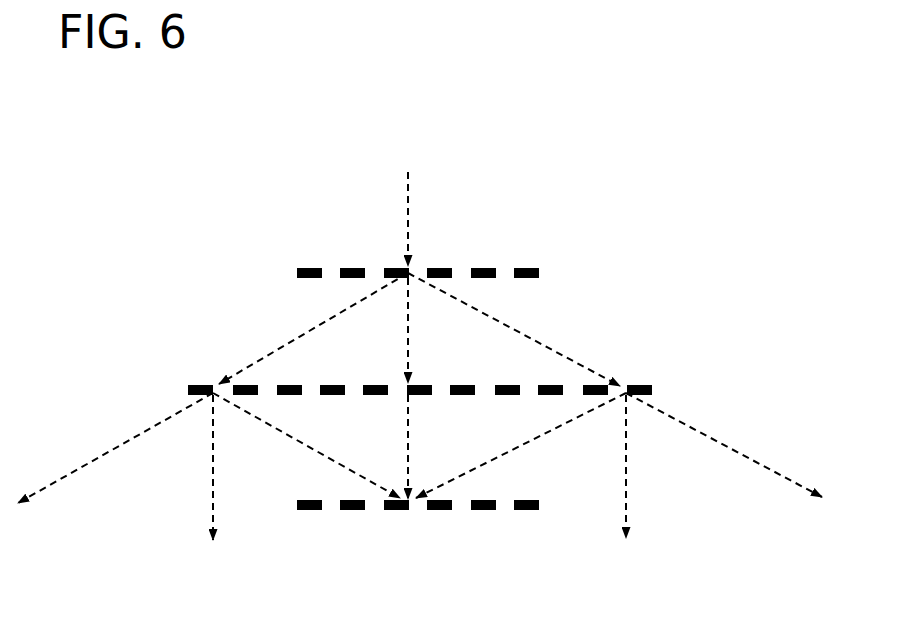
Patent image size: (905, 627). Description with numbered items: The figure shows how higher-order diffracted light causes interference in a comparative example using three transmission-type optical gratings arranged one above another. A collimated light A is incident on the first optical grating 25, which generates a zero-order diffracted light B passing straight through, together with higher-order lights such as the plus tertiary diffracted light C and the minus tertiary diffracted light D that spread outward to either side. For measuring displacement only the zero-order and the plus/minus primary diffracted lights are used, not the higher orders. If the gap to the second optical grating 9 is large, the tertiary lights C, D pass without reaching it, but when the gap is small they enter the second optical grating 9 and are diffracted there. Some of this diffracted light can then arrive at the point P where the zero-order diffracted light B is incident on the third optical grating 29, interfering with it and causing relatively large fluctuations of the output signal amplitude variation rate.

The first optical grating 25 is at (550, 267).
The second optical grating 9 is at (662, 380).
The third optical grating 29 is at (532, 517).
The collimated light A is at (408, 196).
The zero-order diffracted light B is at (408, 345).
The plus tertiary diffracted light C is at (537, 337).
The minus tertiary diffracted light D is at (287, 345).
The point of incidence P is at (415, 508).